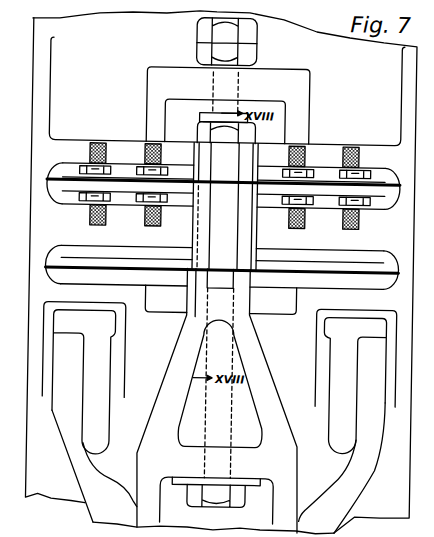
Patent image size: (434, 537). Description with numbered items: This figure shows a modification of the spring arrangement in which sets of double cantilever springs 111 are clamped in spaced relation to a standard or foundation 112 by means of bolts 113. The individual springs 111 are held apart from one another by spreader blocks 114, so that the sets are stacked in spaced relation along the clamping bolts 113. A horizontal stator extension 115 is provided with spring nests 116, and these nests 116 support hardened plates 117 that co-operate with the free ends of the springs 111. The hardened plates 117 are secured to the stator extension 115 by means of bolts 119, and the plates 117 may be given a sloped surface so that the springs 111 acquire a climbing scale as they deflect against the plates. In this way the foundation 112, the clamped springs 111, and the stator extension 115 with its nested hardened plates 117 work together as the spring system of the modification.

The double cantilever springs 111 is at (326, 186).
The standard or foundation 112 is at (282, 423).
The bolts 113 is at (231, 160).
The spreader blocks 114 is at (244, 230).
The horizontal stator extension 115 is at (127, 240).
The spring nests 116 is at (66, 165).
The hardened plates 117 is at (96, 150).
The bolts 119 is at (298, 213).